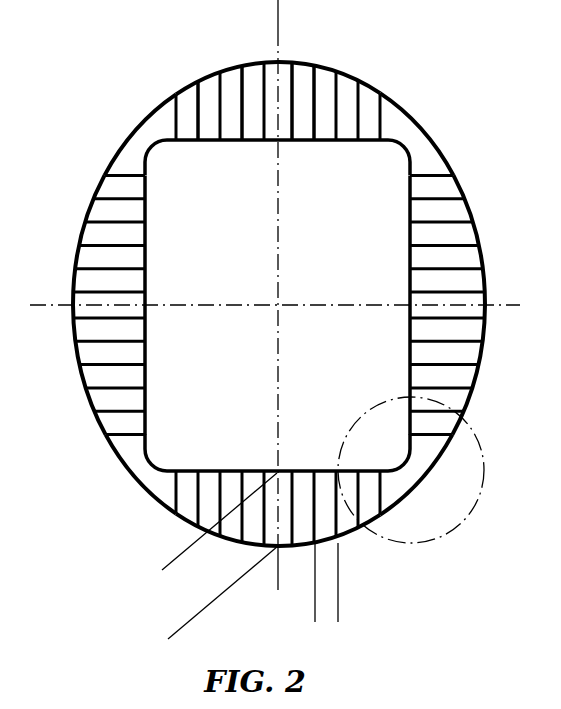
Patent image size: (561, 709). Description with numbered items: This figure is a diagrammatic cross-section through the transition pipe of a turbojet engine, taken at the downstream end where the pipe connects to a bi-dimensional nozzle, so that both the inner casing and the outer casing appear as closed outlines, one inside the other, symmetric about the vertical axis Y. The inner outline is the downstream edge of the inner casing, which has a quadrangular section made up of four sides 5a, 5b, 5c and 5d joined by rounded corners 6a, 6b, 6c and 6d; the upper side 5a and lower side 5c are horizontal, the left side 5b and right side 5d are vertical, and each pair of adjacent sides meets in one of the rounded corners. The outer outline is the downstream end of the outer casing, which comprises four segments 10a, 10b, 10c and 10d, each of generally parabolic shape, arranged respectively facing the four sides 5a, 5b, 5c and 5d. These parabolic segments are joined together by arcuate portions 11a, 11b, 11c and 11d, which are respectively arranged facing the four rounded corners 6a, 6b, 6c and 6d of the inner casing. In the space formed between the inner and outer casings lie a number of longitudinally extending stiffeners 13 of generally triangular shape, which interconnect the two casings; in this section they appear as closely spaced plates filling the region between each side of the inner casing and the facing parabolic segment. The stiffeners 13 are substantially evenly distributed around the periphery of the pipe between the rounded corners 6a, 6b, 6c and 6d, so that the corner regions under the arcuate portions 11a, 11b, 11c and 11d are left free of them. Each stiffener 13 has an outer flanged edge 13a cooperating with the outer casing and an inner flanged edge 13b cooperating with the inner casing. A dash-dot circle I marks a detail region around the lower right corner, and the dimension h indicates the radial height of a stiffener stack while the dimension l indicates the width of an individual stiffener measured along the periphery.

The side 5a is at (240, 141).
The side 5b is at (149, 289).
The side 5c is at (239, 470).
The side 5d is at (405, 262).
The rounded corner 6a is at (398, 152).
The rounded corner 6b is at (156, 154).
The rounded corner 6c is at (155, 452).
The rounded corner 6d is at (399, 460).
The segment 10a is at (333, 68).
The segment 10b is at (72, 332).
The segment 10c is at (348, 537).
The segment 10d is at (486, 275).
The arcuate portion 11a is at (421, 127).
The arcuate portion 11b is at (134, 131).
The arcuate portion 11c is at (130, 478).
The arcuate portion 11d is at (427, 478).
The stiffener 13 is at (207, 97).
The outer flanged edge 13a is at (247, 65).
The inner flanged edge 13b is at (350, 143).
The detail region I is at (472, 427).
The stack height h is at (190, 548).
The lamination width l is at (380, 605).
The axis of symmetry Y is at (289, 295).